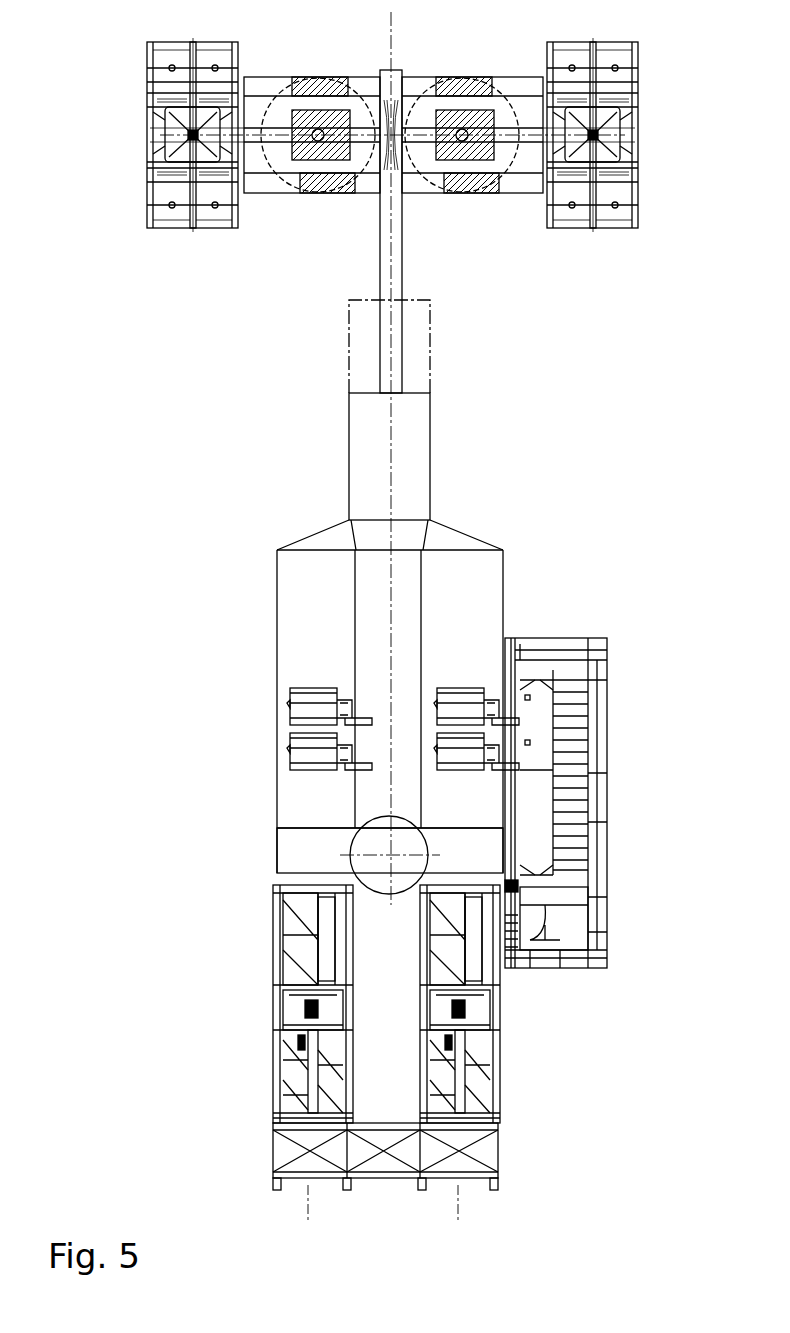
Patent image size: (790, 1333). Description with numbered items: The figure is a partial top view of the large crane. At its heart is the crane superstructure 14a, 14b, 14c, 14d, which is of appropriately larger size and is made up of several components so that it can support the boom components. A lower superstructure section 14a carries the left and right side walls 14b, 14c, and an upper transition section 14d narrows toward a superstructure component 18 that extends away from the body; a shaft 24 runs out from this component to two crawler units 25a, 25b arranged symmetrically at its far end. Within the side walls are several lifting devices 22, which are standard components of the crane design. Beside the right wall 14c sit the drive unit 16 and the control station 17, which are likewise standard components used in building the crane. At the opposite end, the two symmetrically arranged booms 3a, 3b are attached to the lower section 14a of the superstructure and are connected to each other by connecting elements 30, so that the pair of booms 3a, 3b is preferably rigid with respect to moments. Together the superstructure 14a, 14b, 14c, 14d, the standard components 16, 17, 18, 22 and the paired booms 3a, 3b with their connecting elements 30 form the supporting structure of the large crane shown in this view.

The rotation shaft 24 is at (403, 72).
The left crawler track unit 25a is at (148, 130).
The right crawler track unit 25b is at (637, 130).
The superstructure component 18 is at (349, 455).
The crane superstructure 14d is at (456, 545).
The crane superstructure 14b is at (277, 588).
The crane superstructure 14c is at (492, 583).
The crane superstructure 14a is at (277, 850).
The lifting device 22 is at (316, 688).
The drive unit 16 is at (607, 722).
The control station 17 is at (607, 925).
The boom 3a is at (273, 1060).
The boom 3b is at (500, 1060).
The connecting elements 30 is at (273, 1155).